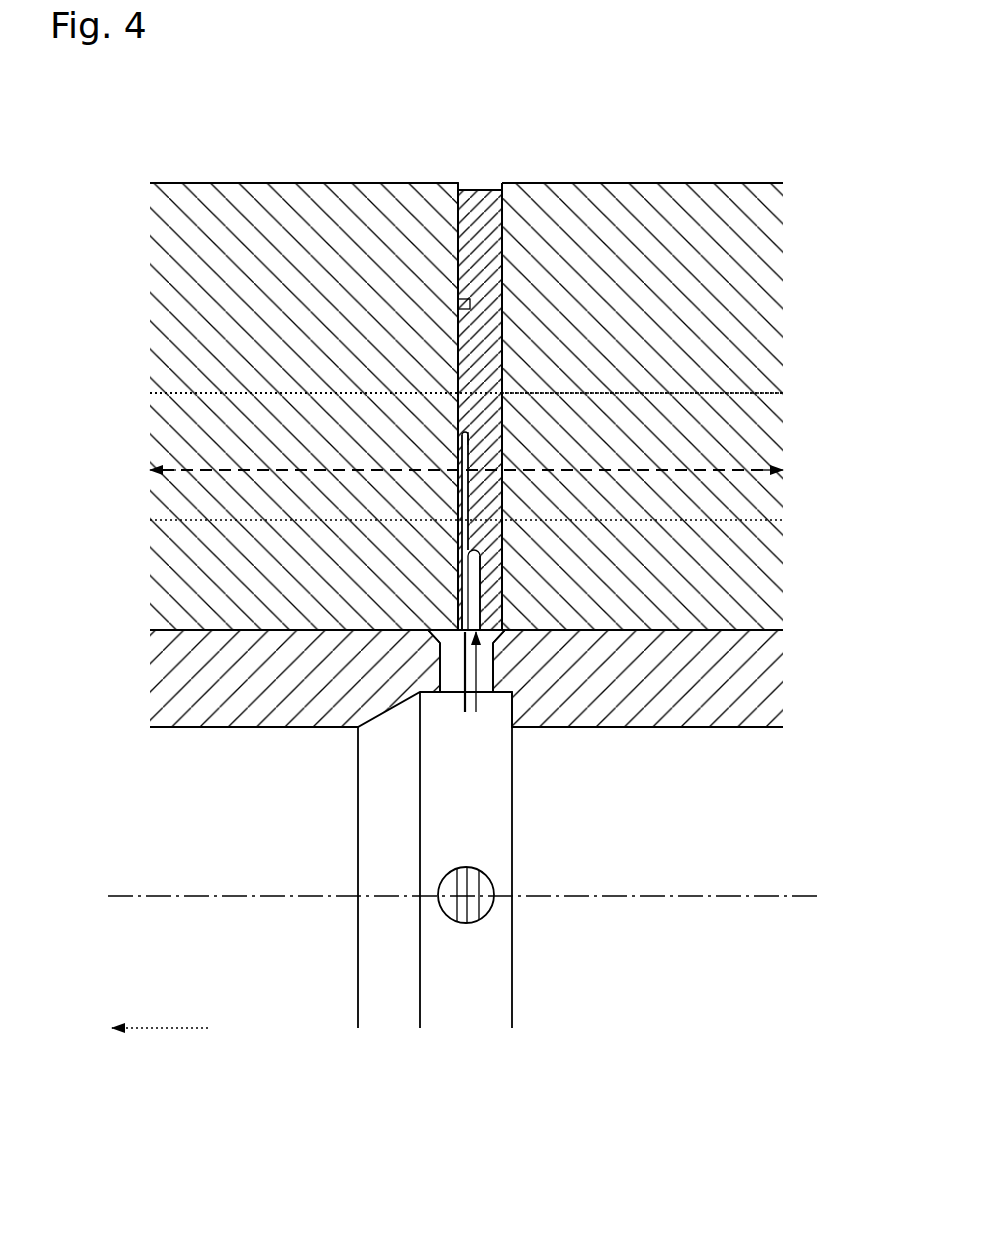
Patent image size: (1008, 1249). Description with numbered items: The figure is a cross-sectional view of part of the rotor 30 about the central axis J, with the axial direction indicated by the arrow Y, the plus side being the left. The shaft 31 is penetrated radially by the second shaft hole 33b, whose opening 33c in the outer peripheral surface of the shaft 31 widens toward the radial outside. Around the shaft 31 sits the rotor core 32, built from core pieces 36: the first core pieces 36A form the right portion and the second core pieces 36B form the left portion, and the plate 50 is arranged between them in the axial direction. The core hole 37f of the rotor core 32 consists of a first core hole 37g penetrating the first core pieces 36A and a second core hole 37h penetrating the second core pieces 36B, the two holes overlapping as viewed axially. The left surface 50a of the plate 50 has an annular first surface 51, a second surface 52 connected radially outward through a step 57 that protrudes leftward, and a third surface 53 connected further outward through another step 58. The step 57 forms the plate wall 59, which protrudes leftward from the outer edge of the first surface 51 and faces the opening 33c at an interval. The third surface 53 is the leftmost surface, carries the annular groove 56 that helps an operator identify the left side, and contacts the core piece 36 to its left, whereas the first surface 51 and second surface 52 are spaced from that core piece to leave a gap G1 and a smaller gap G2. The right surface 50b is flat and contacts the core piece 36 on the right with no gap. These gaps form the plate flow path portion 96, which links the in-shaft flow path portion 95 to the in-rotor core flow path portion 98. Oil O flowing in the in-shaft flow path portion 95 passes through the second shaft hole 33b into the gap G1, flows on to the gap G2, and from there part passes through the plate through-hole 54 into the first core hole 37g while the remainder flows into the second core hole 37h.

The mold 30 is at (778, 157).
The rotor core 32 is at (724, 181).
The core piece 36 is at (247, 182).
The first core piece 36A is at (660, 183).
The second core piece 36B is at (326, 183).
The plate 50 is at (485, 187).
The left surface 50a is at (455, 216).
The right surface 50b is at (506, 216).
The groove 56 is at (458, 305).
The third surface 53 is at (458, 331).
The in-rotor core flow path portion 98 is at (332, 406).
The second core hole 37h is at (250, 395).
The first core hole 37g is at (690, 393).
The core hole 37f is at (186, 398).
The oil O is at (150, 473).
The step 58 is at (458, 440).
The gap G2 is at (458, 499).
The plate wall 59 is at (459, 547).
The gap G1 is at (466, 570).
The second surface 52 is at (470, 442).
The plate through-hole 54 is at (503, 487).
The step 57 is at (480, 552).
The first surface 51 is at (468, 628).
The shaft 31 is at (763, 683).
The opening 33c is at (434, 636).
The second shaft hole 33b is at (440, 660).
The in-shaft flow path portion 95 is at (551, 993).
The plate flow path portion 96 is at (477, 660).
The central axis J is at (795, 887).
The Y direction Y is at (150, 1029).